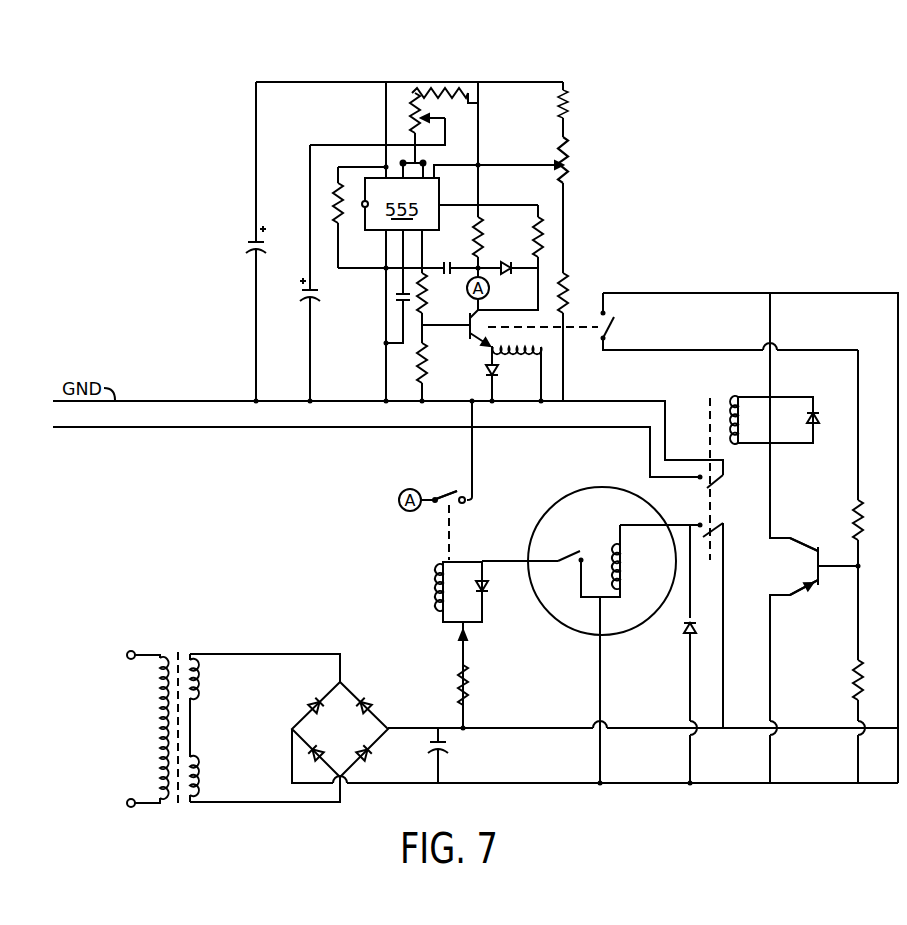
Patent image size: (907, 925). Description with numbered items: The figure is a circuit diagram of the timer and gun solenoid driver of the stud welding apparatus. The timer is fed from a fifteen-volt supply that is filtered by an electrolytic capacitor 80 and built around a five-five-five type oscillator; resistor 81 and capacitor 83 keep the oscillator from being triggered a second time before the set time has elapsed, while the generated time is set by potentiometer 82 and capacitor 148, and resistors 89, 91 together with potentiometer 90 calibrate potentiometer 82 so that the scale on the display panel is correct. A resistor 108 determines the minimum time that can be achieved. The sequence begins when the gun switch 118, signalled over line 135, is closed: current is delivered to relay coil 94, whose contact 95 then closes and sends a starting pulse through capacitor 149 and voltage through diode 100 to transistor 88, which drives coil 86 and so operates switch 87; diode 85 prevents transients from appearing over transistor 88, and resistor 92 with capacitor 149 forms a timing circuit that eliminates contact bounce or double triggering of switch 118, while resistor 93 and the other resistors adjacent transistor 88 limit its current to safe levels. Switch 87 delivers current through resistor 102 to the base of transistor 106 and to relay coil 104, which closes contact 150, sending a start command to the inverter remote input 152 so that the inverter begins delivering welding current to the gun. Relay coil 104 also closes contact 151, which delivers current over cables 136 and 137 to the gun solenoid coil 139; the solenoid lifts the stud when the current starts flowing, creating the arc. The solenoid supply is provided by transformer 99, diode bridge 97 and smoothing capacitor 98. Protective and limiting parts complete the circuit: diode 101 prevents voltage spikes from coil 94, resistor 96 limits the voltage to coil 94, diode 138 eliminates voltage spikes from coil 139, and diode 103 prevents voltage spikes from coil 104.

The electrolytic capacitor 80 is at (255, 240).
The resistor 81 is at (334, 208).
The potentiometer 82 is at (413, 127).
The capacitor 83 is at (395, 298).
The diode 85 is at (486, 372).
The coil 86 is at (513, 358).
The switch 87 is at (608, 330).
The transistor 88 is at (468, 320).
The resistor 89 is at (565, 285).
The potentiometer 90 is at (567, 152).
The resistor 91 is at (565, 92).
The resistor 92 is at (478, 244).
The resistor 93 is at (538, 244).
The relay coil 94 is at (430, 582).
The contact 95 is at (456, 490).
The resistor 96 is at (460, 680).
The diode bridge 97 is at (368, 695).
The smoothing capacitor 98 is at (448, 750).
The transformer 99 is at (200, 670).
The diode 100 is at (500, 276).
The diode 101 is at (488, 588).
The resistor 102 is at (857, 507).
The diode 103 is at (819, 420).
The relay coil 104 is at (741, 402).
The transistor 106 is at (809, 585).
The resistor 108 is at (440, 84).
The gun switch 118 is at (566, 552).
The line 135 is at (527, 561).
The cable 136 is at (600, 668).
The cable 137 is at (672, 522).
The diode 138 is at (686, 628).
The coil 139 is at (618, 558).
The capacitor 148 is at (304, 302).
The capacitor 149 is at (450, 264).
The contact 150 is at (720, 487).
The contact 151 is at (724, 522).
The inverter remote input 152 is at (173, 428).